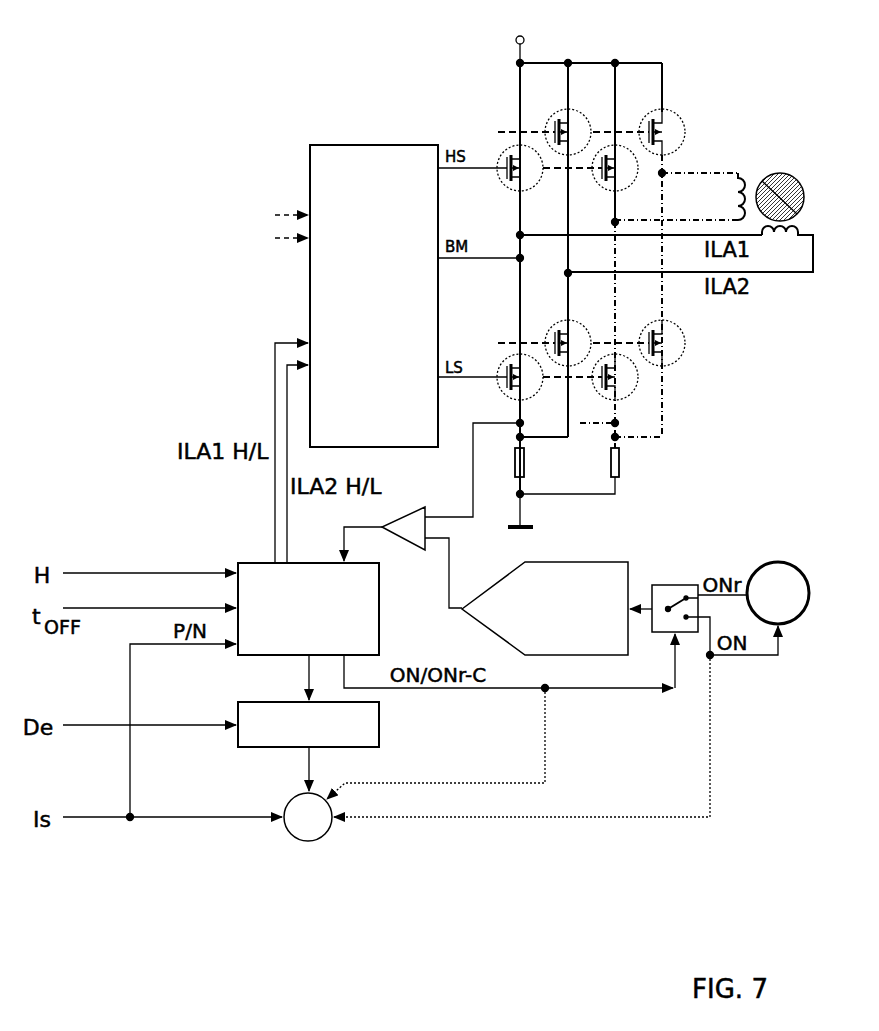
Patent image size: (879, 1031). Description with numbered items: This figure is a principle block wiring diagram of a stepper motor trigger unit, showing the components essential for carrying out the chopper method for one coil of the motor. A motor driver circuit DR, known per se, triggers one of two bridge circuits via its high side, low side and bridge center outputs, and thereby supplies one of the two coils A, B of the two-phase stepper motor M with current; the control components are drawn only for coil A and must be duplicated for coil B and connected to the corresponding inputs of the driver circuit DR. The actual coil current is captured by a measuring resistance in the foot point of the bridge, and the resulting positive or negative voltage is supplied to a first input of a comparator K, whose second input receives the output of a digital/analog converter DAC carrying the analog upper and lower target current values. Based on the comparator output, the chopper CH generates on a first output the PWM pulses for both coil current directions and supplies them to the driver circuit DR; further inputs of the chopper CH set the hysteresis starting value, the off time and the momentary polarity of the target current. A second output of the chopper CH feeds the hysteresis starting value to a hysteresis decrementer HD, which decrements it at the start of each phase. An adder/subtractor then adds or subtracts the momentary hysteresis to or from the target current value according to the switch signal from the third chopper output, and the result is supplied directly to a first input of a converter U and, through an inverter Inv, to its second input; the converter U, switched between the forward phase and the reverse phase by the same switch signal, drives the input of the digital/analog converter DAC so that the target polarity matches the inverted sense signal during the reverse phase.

The motor driver circuit DR is at (356, 296).
The motor coil B is at (679, 198).
The motor coil A is at (665, 251).
The stepper motor M is at (783, 181).
The comparator K is at (384, 540).
The chopper CH is at (308, 610).
The hysteresis decrementer HD is at (308, 723).
The digital/analog converter DAC is at (545, 608).
The converter U is at (675, 595).
The inverter Inv is at (778, 583).